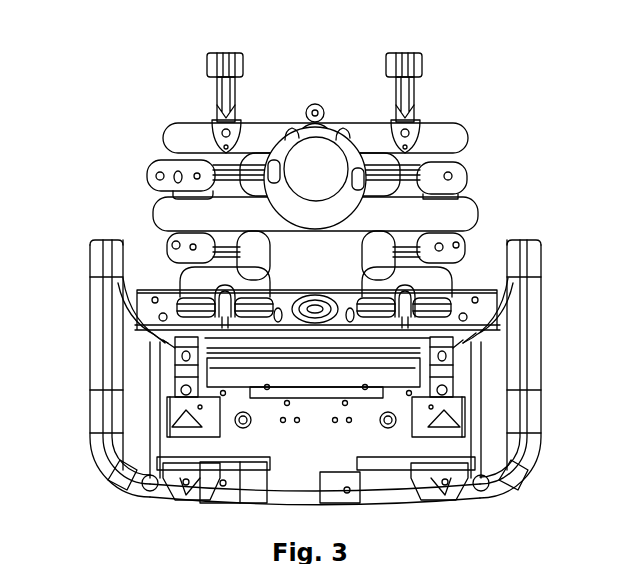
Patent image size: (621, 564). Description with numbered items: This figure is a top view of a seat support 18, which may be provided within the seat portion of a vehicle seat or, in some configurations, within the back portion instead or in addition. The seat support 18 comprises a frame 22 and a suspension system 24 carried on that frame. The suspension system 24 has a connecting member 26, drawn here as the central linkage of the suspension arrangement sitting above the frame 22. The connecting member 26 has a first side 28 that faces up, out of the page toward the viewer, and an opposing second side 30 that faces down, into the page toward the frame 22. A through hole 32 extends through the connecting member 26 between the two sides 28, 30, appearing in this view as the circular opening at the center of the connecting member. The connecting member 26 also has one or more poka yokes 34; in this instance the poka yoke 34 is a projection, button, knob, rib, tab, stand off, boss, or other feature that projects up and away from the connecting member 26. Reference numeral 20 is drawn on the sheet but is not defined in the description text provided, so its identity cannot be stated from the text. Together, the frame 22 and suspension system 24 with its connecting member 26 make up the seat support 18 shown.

The seat support 18 is at (121, 50).
The bracket 20 is at (446, 117).
The frame 22 is at (528, 485).
The suspension system 24 is at (152, 203).
The connecting member 26 is at (295, 118).
The first side 28 is at (347, 128).
The second side 30 is at (357, 211).
The through hole 32 is at (303, 182).
The poka yoke 34 is at (313, 103).